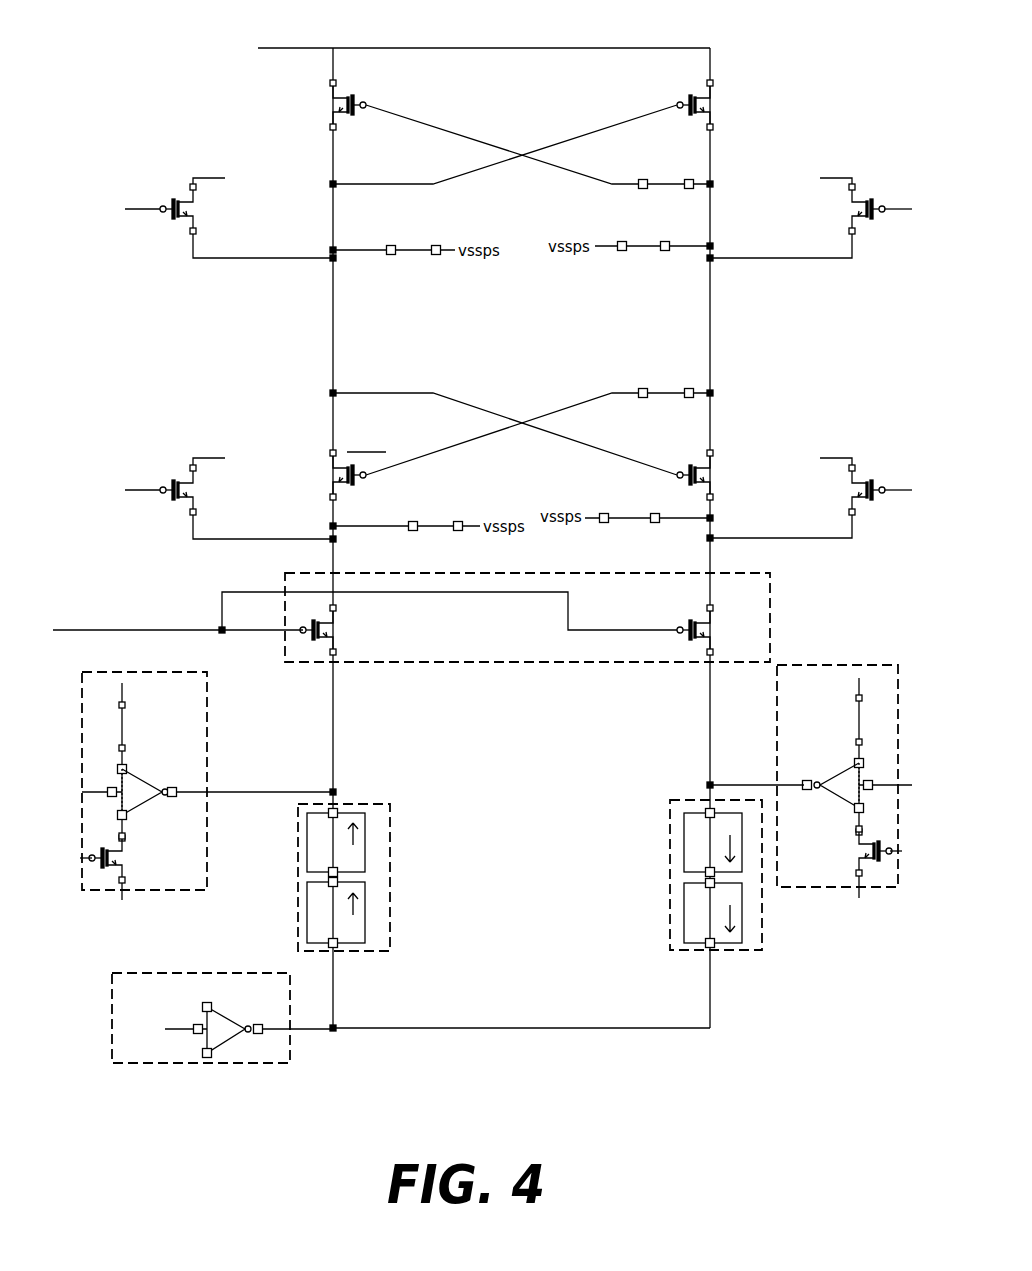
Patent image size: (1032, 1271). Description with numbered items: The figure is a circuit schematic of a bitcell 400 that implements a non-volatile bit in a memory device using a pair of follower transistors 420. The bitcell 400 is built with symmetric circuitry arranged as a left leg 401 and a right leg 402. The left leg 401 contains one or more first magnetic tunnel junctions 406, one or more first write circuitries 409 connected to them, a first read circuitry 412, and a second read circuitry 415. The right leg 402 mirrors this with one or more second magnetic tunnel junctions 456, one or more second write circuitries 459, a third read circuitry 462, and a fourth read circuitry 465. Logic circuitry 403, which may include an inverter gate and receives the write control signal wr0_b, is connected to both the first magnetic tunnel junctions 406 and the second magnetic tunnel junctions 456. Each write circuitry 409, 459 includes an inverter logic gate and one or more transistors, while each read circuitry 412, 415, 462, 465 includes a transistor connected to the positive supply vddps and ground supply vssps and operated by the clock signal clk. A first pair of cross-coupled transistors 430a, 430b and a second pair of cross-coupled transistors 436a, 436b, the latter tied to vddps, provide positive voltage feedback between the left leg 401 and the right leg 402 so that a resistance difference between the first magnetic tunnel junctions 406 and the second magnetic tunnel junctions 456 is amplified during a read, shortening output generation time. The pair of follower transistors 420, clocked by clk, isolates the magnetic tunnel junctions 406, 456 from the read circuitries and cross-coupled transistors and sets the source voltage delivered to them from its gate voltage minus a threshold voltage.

The bitcell 400 is at (732, 1016).
The left leg 401 is at (262, 880).
The right leg 402 is at (792, 943).
The logic circuitry 403 is at (222, 1039).
The first magnetic tunnel junctions 406 is at (363, 877).
The first write circuitries 409 is at (113, 794).
The first read circuitry 412 is at (230, 490).
The second read circuitry 415 is at (230, 210).
The pair of follower transistors 420 is at (401, 603).
The first cross-coupled transistor 430a is at (496, 445).
The first cross-coupled transistor 430b is at (546, 445).
The second cross-coupled transistor 436a is at (521, 134).
The second cross-coupled transistor 436b is at (521, 126).
The second magnetic tunnel junctions 456 is at (692, 875).
The second write circuitries 459 is at (863, 788).
The third read circuitry 462 is at (809, 490).
The fourth read circuitry 465 is at (809, 210).